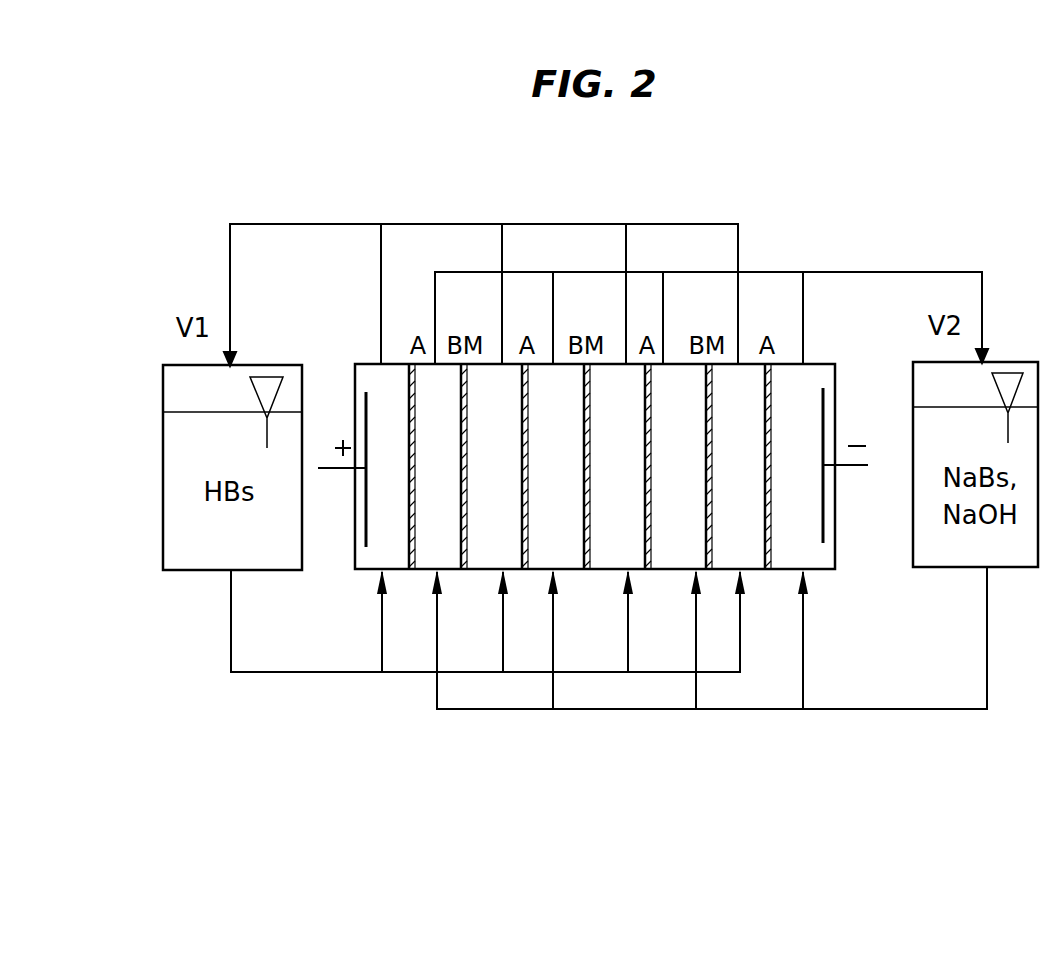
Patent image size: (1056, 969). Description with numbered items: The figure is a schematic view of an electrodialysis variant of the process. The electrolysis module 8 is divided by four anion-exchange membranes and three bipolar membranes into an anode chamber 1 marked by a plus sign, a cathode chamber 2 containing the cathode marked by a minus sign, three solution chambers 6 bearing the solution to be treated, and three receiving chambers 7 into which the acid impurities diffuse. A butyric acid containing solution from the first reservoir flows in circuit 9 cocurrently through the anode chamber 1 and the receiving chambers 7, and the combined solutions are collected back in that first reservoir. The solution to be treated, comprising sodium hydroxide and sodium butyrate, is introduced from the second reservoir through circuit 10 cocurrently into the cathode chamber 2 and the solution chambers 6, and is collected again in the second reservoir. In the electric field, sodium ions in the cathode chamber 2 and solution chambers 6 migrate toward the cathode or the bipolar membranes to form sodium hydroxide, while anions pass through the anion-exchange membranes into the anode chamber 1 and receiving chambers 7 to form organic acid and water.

The anode chamber 1 is at (363, 466).
The cathode chamber 2 is at (820, 466).
The solution chambers 6 is at (560, 466).
The receiving chambers 7 is at (617, 466).
The electrolysis module 8 is at (845, 582).
The circuit 9 is at (214, 694).
The circuit 10 is at (853, 718).